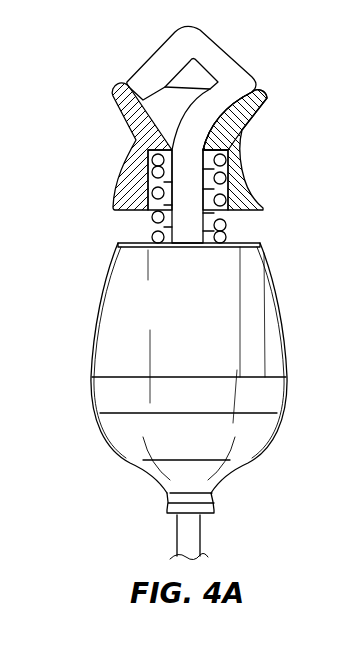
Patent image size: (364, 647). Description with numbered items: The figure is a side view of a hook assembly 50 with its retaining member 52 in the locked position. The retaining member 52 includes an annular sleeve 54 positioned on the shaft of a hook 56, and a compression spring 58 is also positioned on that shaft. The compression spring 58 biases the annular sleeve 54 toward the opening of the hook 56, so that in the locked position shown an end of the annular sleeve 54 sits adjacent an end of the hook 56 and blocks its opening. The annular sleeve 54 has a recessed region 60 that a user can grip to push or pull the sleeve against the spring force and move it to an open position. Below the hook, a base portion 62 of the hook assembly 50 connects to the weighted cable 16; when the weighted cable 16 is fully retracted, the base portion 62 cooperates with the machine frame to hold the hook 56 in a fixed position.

The hook assembly 50 is at (183, 126).
The retaining member 52 is at (100, 163).
The annular sleeve 54 is at (253, 145).
The hook 56 is at (227, 55).
The compression spring 58 is at (247, 172).
The recessed region 60 is at (279, 150).
The base portion 62 is at (254, 353).
The weighted cable 16 is at (198, 534).